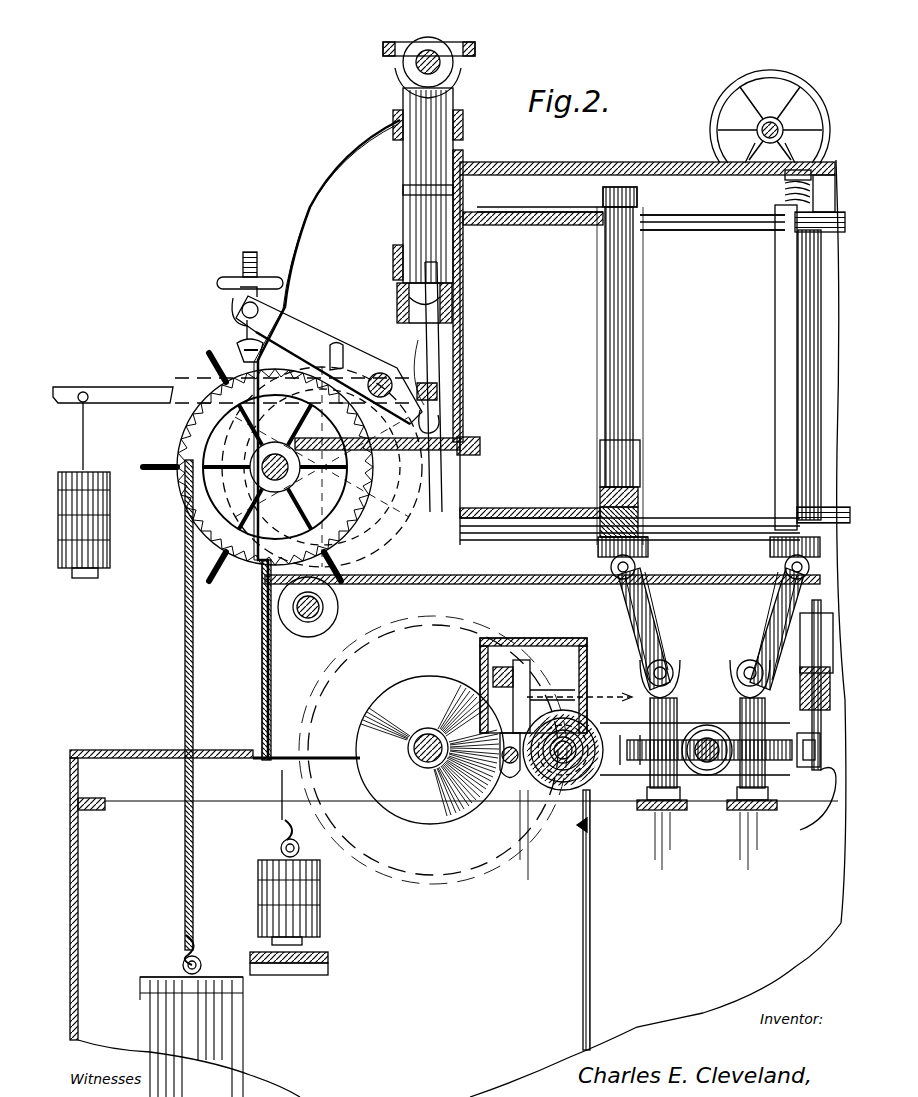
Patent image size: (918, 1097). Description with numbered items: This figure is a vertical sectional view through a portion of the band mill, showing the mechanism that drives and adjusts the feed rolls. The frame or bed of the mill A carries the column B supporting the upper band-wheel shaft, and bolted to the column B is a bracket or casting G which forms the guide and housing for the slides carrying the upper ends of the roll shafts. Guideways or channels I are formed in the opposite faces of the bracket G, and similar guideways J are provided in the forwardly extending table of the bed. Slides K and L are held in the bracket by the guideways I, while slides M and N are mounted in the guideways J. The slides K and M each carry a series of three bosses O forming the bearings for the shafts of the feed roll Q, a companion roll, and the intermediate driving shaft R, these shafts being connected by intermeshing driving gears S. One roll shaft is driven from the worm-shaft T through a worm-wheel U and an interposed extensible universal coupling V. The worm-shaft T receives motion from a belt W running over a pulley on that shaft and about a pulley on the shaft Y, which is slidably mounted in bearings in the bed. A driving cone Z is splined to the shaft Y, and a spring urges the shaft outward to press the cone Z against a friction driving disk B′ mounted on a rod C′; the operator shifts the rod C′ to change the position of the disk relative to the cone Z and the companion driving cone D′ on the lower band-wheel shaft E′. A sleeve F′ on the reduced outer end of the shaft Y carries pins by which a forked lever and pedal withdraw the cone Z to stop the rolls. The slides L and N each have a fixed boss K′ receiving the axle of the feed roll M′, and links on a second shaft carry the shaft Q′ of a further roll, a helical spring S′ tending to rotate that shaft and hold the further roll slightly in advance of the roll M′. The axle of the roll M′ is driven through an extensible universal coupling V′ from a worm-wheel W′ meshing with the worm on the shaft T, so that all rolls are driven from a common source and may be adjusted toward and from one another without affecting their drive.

The frame or bed A is at (301, 467).
The column B is at (455, 352).
The slide K is at (545, 228).
The bracket or casting G is at (712, 225).
The guideways or channels I is at (752, 232).
The slide M is at (552, 512).
The guideways J is at (718, 518).
The intermediate driving shaft R is at (640, 316).
The bosses O is at (640, 212).
The intermeshing driving gears S is at (650, 540).
The feed roll Q is at (640, 470).
The sleeve F′ is at (648, 550).
The feed roll M′ is at (780, 405).
The slide L is at (810, 260).
The fixed boss K′ is at (785, 235).
The slide N is at (830, 518).
The shaft Q′ is at (770, 545).
The helical spring S′ is at (783, 192).
The companion driving cone D′ is at (433, 750).
The lower band-wheel shaft E′ is at (433, 735).
The rod C′ is at (545, 700).
The belt W is at (610, 718).
The friction driving disk B′ is at (515, 775).
The shaft Y is at (565, 765).
The driving cone Z is at (548, 780).
The worm-wheel U is at (640, 762).
The worm-shaft T is at (707, 725).
The extensible universal coupling V is at (650, 625).
The extensible universal coupling V′ is at (768, 625).
The worm-wheel W′ is at (806, 760).